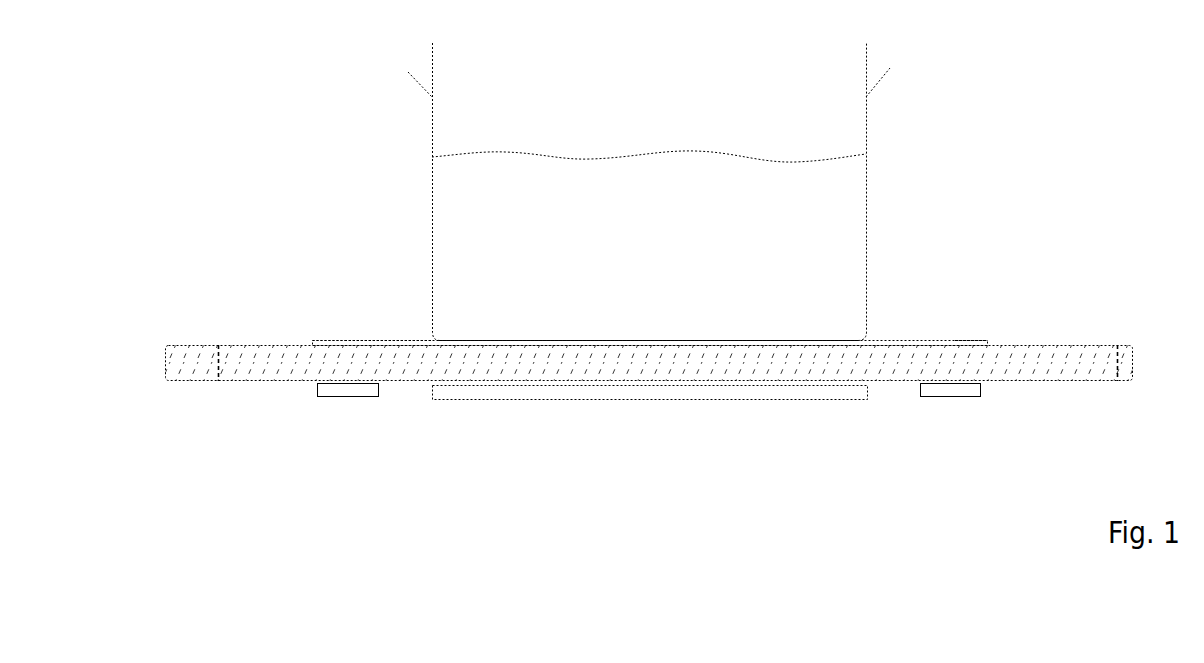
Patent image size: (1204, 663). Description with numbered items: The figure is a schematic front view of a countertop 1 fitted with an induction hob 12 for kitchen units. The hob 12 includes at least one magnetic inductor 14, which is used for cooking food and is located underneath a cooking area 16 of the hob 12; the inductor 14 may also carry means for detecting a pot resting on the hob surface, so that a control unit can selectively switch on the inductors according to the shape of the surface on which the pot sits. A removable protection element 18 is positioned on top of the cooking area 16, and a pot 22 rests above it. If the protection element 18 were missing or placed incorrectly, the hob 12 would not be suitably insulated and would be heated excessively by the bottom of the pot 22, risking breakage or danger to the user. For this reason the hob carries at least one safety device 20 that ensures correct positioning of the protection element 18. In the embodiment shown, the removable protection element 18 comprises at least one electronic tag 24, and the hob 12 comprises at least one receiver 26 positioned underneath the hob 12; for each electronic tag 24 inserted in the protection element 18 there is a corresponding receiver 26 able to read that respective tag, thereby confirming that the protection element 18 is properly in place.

The countertop 1 is at (198, 350).
The induction hob 12 is at (1098, 338).
The magnetic inductor 14 is at (607, 400).
The cooking area 16 is at (766, 334).
The removable protection element 18 is at (888, 341).
The safety device 20 is at (335, 342).
The pot 22 is at (866, 175).
The electronic tag 24 is at (357, 345).
The receiver 26 is at (345, 398).